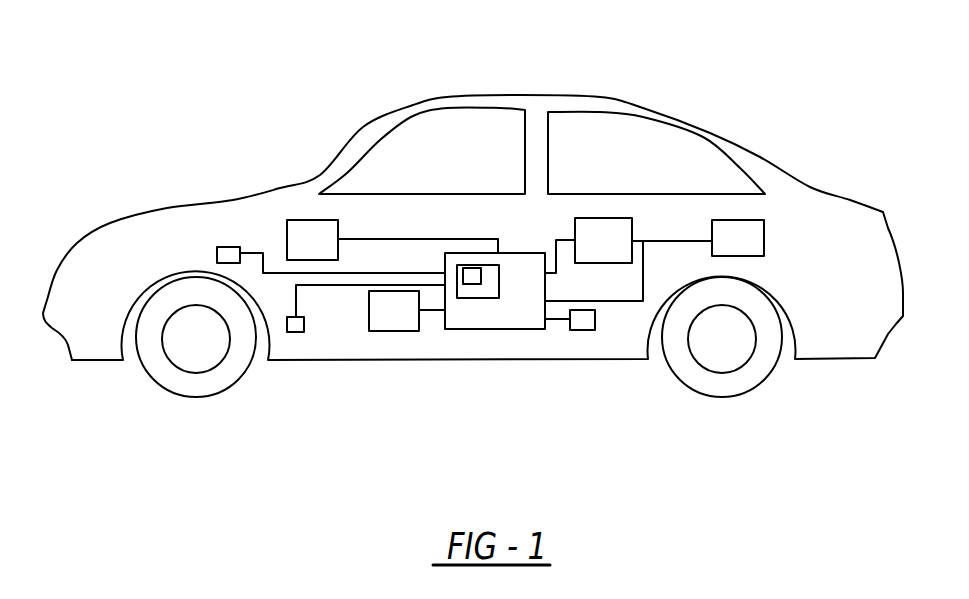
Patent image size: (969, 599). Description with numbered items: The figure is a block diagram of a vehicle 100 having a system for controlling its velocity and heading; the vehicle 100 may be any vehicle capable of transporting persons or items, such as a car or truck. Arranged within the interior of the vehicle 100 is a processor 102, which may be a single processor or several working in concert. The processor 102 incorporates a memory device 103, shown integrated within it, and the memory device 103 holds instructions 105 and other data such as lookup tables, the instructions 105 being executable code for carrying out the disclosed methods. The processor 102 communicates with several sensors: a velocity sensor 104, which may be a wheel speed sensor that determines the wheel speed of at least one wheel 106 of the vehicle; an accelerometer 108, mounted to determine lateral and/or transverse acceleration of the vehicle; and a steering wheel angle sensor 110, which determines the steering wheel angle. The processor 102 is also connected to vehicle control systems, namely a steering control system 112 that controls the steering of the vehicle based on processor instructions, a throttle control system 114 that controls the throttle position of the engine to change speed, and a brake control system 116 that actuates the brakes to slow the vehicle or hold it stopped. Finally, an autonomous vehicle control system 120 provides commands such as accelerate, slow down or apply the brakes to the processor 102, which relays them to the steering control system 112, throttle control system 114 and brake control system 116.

The vehicle 100 is at (743, 140).
The processor 102 is at (505, 315).
The memory device 103 is at (463, 292).
The instructions 105 is at (472, 275).
The velocity sensor 104 is at (220, 252).
The wheel 106 is at (168, 368).
The accelerometer 108 is at (582, 325).
The steering wheel angle sensor 110 is at (295, 327).
The steering control system 112 is at (300, 235).
The throttle control system 114 is at (390, 317).
The brake control system 116 is at (750, 242).
The autonomous vehicle control system 120 is at (609, 230).